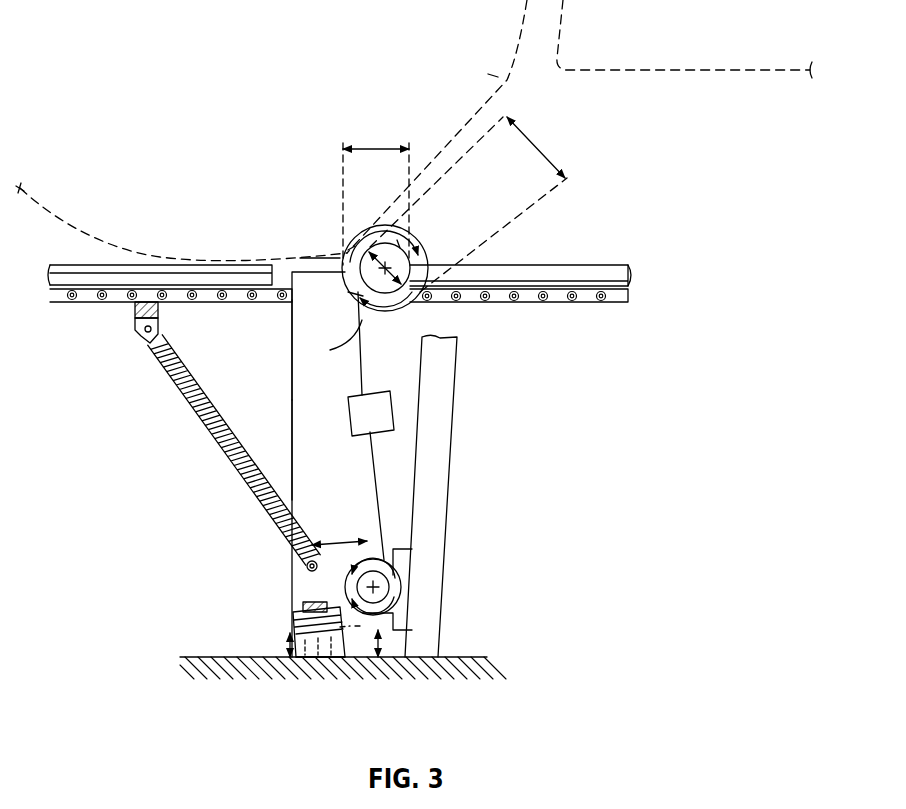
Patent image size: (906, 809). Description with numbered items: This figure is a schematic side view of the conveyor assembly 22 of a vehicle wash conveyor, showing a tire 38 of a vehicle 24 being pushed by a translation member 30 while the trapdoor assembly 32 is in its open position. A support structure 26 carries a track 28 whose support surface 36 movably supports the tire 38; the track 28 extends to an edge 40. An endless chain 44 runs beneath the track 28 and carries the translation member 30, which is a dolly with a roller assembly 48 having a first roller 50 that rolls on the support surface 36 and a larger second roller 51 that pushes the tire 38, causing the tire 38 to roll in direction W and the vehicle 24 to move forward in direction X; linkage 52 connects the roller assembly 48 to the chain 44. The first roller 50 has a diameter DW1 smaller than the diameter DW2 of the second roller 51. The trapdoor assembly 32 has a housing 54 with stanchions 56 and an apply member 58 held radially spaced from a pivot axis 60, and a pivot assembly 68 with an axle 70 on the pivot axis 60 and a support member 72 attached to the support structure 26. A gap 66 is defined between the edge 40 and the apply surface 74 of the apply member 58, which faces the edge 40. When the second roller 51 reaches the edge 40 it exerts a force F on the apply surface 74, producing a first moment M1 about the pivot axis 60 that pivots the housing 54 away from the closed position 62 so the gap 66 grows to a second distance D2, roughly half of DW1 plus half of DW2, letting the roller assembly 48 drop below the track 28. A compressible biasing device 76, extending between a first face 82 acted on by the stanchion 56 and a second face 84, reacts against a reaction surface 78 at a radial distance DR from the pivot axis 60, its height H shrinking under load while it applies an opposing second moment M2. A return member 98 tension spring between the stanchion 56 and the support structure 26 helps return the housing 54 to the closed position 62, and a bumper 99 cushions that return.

The conveyor assembly 22 is at (349, 272).
The vehicle 24 is at (733, 70).
The support structure 26 is at (135, 318).
The track 28 is at (588, 277).
The translation member 30 is at (406, 256).
The trapdoor assembly 32 is at (283, 366).
The support surface 36 is at (558, 260).
The tire 38 is at (522, 90).
The edge 40 is at (420, 302).
The chain 44 is at (498, 296).
The roller assembly 48 is at (368, 205).
The first roller 50 is at (392, 253).
The second roller 51 is at (398, 242).
The linkage 52 is at (352, 293).
The housing 54 is at (292, 336).
The stanchion 56 is at (320, 438).
The apply member 58 is at (345, 258).
The pivot axis 60 is at (407, 618).
The closed position 62 is at (282, 208).
The gap 66 is at (358, 426).
The pivot assembly 68 is at (428, 479).
The axle 70 is at (423, 566).
The support member 72 is at (391, 602).
The apply surface 74 is at (347, 246).
The biasing device 76 is at (291, 640).
The reaction surface 78 is at (233, 655).
The first face 82 is at (303, 606).
The second face 84 is at (305, 658).
The return member 98 is at (202, 425).
The bumper 99 is at (354, 416).
The tire rolling direction W is at (237, 240).
The forward direction X is at (30, 229).
The force F is at (360, 298).
The height H is at (289, 645).
The second distance D2 is at (373, 146).
The diameter of the first roller DW1 is at (331, 349).
The diameter of the second roller DW2 is at (530, 146).
The radial distance DR is at (336, 542).
The first moment M1 is at (379, 558).
The second moment M2 is at (370, 614).